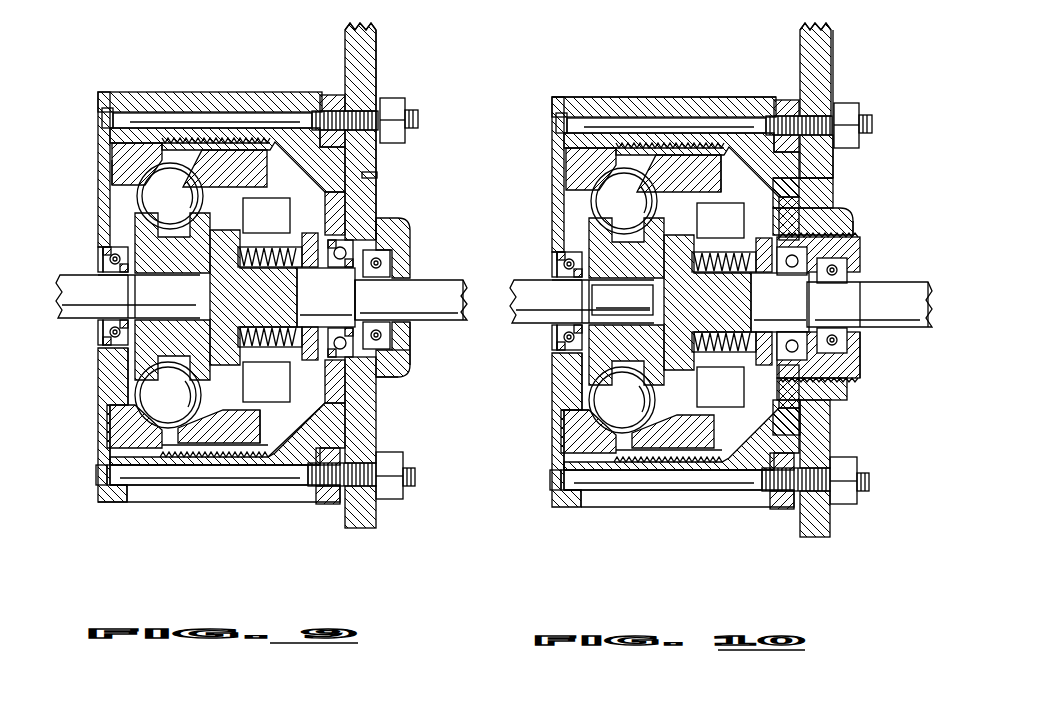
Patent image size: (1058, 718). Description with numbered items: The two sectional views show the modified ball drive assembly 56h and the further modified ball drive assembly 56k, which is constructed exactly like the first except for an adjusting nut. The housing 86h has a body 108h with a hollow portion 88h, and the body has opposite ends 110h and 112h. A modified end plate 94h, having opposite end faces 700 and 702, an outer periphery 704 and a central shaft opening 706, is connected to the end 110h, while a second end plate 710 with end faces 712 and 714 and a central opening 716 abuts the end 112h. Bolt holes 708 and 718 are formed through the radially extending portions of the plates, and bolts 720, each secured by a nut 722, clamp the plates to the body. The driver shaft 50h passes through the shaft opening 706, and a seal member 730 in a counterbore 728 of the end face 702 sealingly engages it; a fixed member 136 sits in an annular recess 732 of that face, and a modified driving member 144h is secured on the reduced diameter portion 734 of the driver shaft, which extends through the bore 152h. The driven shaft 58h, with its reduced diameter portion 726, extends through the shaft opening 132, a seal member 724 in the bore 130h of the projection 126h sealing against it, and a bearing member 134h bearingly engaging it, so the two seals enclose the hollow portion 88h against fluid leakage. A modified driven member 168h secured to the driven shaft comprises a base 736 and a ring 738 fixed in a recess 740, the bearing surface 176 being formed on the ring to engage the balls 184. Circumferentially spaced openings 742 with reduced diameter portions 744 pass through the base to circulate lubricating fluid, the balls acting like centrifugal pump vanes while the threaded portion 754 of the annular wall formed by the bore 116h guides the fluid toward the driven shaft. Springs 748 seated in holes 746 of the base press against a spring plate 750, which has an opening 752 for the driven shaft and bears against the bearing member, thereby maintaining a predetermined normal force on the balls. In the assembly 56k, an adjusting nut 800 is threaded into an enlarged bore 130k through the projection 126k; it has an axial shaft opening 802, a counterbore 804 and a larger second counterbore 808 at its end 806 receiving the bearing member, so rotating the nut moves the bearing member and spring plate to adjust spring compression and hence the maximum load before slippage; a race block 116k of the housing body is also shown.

In FIG. 9, the driver shaft 50h is at (58, 303).
In FIG. 10, the driver shaft 50h is at (528, 280).
In FIG. 9, the ball drive assembly 56h is at (106, 518).
In FIG. 10, the ball drive assembly 56k is at (686, 80).
In FIG. 9, the driven shaft 58h is at (466, 293).
In FIG. 10, the driven shaft 58h is at (912, 283).
In FIG. 9, the housing 86h is at (240, 475).
In FIG. 10, the housing 86h is at (632, 475).
In FIG. 9, the hollow portion 88h is at (173, 447).
In FIG. 10, the hollow portion 88h is at (620, 448).
In FIG. 9, the end plate 94h is at (108, 360).
In FIG. 10, the end plate 94h is at (552, 447).
In FIG. 9, the body 108h is at (213, 465).
In FIG. 10, the body 108h is at (745, 468).
In FIG. 9, the end 110h is at (120, 498).
In FIG. 10, the end 110h is at (575, 462).
In FIG. 9, the end 112h is at (365, 392).
In FIG. 10, the end 112h is at (822, 432).
In FIG. 9, the bore 116h is at (112, 151).
In FIG. 10, the race block 116k is at (655, 470).
In FIG. 9, the projection 126h is at (412, 360).
In FIG. 10, the projection 126k is at (830, 215).
In FIG. 9, the bore 130h is at (400, 243).
In FIG. 10, the enlarged bore 130k is at (858, 240).
In FIG. 9, the shaft opening 132 is at (400, 318).
In FIG. 9, the bearing member 134h is at (395, 228).
In FIG. 10, the bearing member 134h is at (850, 347).
In FIG. 9, the fixed member 136 is at (110, 420).
In FIG. 10, the fixed member 136 is at (560, 425).
In FIG. 9, the driving member 144h is at (128, 365).
In FIG. 10, the driving member 144h is at (590, 375).
In FIG. 9, the bore 152h is at (97, 318).
In FIG. 10, the bore 152h is at (580, 305).
In FIG. 9, the driven member 168h is at (262, 415).
In FIG. 10, the driven member 168h is at (711, 160).
In FIG. 9, the bearing surface 176 is at (233, 462).
In FIG. 10, the bearing surface 176 is at (663, 150).
In FIG. 9, the balls 184 is at (172, 208).
In FIG. 10, the balls 184 is at (626, 216).
In FIG. 9, the end face 700 is at (98, 443).
In FIG. 10, the end face 700 is at (552, 372).
In FIG. 9, the end face 702 is at (142, 96).
In FIG. 10, the end face 702 is at (600, 100).
In FIG. 9, the outer periphery 704 is at (104, 93).
In FIG. 10, the outer periphery 704 is at (566, 100).
In FIG. 9, the shaft opening 706 is at (95, 278).
In FIG. 10, the shaft opening 706 is at (555, 330).
In FIG. 9, the bolt holes 708 is at (128, 100).
In FIG. 10, the bolt holes 708 is at (562, 132).
In FIG. 9, the second end plate 710 is at (366, 50).
In FIG. 10, the second end plate 710 is at (818, 447).
In FIG. 9, the end face 712 is at (348, 36).
In FIG. 10, the end face 712 is at (800, 50).
In FIG. 9, the end face 714 is at (380, 58).
In FIG. 10, the end face 714 is at (835, 40).
In FIG. 9, the opening 716 is at (366, 176).
In FIG. 10, the opening 716 is at (820, 178).
In FIG. 9, the bolt holes 718 is at (410, 119).
In FIG. 10, the bolt holes 718 is at (840, 112).
In FIG. 9, the bolts 720 is at (154, 112).
In FIG. 10, the bolts 720 is at (597, 118).
In FIG. 9, the nut 722 is at (400, 146).
In FIG. 10, the nut 722 is at (852, 107).
In FIG. 9, the seal member 724 is at (392, 262).
In FIG. 10, the seal member 724 is at (850, 338).
In FIG. 9, the reduced diameter portion 726 is at (452, 325).
In FIG. 10, the reduced diameter portion 726 is at (905, 292).
In FIG. 9, the counterbore 728 is at (103, 340).
In FIG. 10, the counterbore 728 is at (568, 255).
In FIG. 9, the seal member 730 is at (103, 250).
In FIG. 10, the seal member 730 is at (553, 255).
In FIG. 9, the annular recess 732 is at (112, 173).
In FIG. 10, the annular recess 732 is at (567, 170).
In FIG. 9, the reduced diameter portion 734 is at (136, 291).
In FIG. 10, the reduced diameter portion 734 is at (533, 290).
In FIG. 9, the base 736 is at (336, 193).
In FIG. 10, the base 736 is at (740, 418).
In FIG. 9, the ring 738 is at (220, 140).
In FIG. 10, the ring 738 is at (680, 445).
In FIG. 9, the recess 740 is at (245, 150).
In FIG. 10, the recess 740 is at (685, 433).
In FIG. 9, the openings 742 is at (292, 238).
In FIG. 10, the openings 742 is at (734, 305).
In FIG. 9, the reduced diameter portion 744 is at (235, 212).
In FIG. 10, the reduced diameter portion 744 is at (648, 195).
In FIG. 9, the holes 746 is at (206, 291).
In FIG. 10, the holes 746 is at (786, 305).
In FIG. 9, the spring 748 is at (326, 297).
In FIG. 10, the spring 748 is at (632, 305).
In FIG. 9, the spring plate 750 is at (400, 395).
In FIG. 10, the spring plate 750 is at (858, 380).
In FIG. 9, the opening 752 is at (335, 308).
In FIG. 10, the opening 752 is at (686, 140).
In FIG. 9, the threaded portion 754 is at (202, 130).
In FIG. 10, the adjusting nut 800 is at (862, 355).
In FIG. 10, the shaft opening 802 is at (852, 270).
In FIG. 10, the counterbore 804 is at (814, 290).
In FIG. 10, the end 806 is at (813, 203).
In FIG. 10, the second counterbore 808 is at (823, 220).